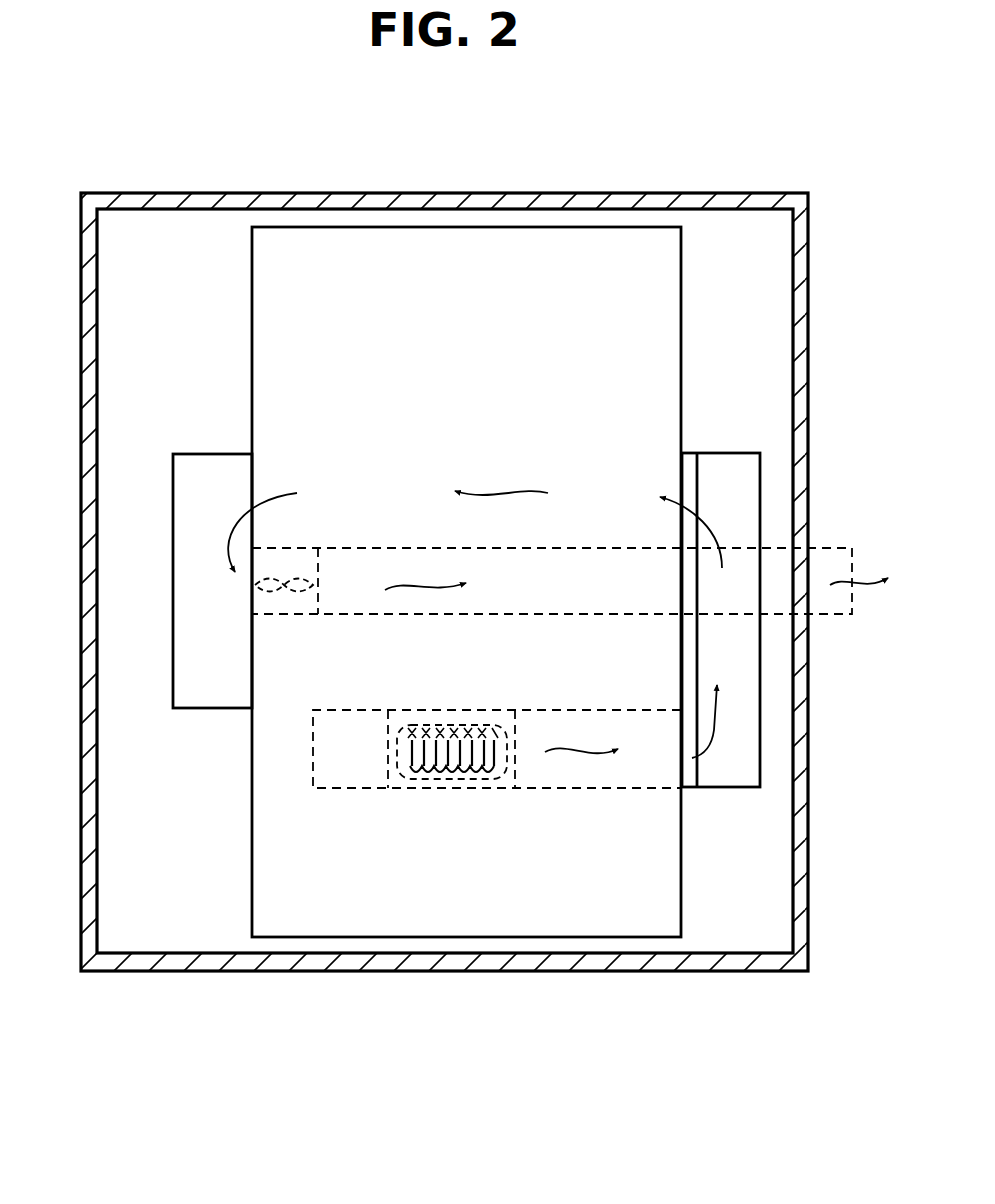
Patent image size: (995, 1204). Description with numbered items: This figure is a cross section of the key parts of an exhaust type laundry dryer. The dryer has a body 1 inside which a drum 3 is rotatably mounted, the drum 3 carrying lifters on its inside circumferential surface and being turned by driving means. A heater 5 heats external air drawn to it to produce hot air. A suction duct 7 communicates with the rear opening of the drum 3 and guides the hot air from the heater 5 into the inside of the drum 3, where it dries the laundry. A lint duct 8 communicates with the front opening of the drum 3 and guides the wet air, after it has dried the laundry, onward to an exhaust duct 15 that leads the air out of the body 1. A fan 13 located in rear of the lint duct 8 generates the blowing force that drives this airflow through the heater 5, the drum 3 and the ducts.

The body 1 is at (726, 192).
The drum 3 is at (487, 227).
The heater 5 is at (445, 773).
The suction duct 7 is at (748, 715).
The lint duct 8 is at (192, 498).
The fan 13 is at (272, 593).
The exhaust duct 15 is at (775, 547).